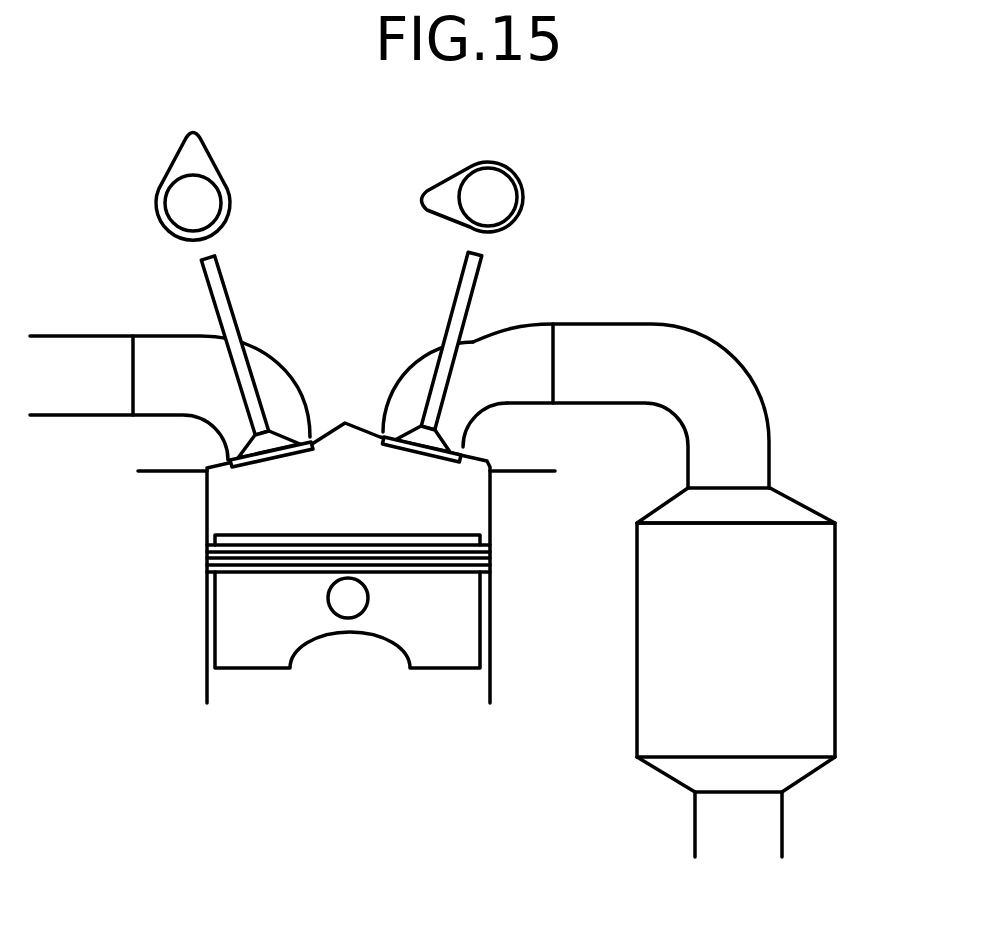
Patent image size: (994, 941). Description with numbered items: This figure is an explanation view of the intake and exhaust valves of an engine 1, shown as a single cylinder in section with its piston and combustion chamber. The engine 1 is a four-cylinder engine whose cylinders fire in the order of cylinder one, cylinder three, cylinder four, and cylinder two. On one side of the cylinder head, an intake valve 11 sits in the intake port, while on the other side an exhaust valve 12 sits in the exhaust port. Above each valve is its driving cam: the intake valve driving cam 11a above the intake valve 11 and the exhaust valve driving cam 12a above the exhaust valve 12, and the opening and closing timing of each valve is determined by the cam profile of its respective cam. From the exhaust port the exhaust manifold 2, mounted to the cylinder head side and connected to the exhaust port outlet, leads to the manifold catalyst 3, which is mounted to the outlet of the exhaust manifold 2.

The engine 1 is at (140, 549).
The exhaust manifold 2 is at (723, 385).
The manifold catalyst 3 is at (837, 593).
The intake valve 11 is at (212, 302).
The intake valve driving cam 11a is at (216, 163).
The exhaust valve 12 is at (478, 278).
The exhaust valve driving cam 12a is at (448, 177).